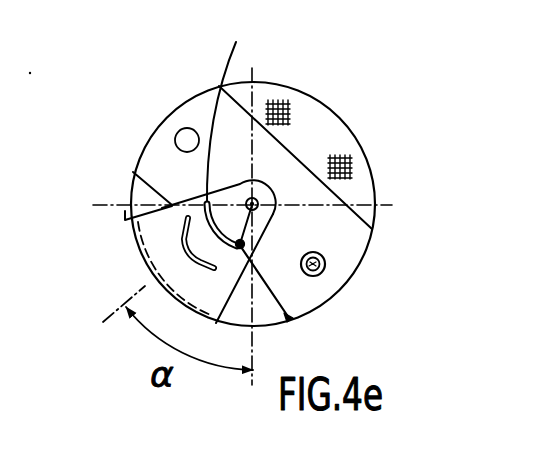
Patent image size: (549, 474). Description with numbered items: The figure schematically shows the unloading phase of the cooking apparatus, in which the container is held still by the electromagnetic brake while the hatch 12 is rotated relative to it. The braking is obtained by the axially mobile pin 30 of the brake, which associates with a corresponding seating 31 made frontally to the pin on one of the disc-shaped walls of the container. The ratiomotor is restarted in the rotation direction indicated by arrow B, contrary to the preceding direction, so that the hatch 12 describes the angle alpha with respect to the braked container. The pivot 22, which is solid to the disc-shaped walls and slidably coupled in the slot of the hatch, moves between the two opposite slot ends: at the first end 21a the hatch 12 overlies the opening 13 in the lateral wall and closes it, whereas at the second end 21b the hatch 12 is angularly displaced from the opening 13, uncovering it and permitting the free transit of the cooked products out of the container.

The hatch 12 is at (126, 246).
The opening 13 is at (265, 313).
The first end of the slot 21a is at (253, 169).
The second end of the slot 21b is at (278, 193).
The pivot 22 is at (243, 256).
The axially mobile pin 30 is at (322, 253).
The seating 31 is at (326, 262).
The arrow B is at (187, 214).